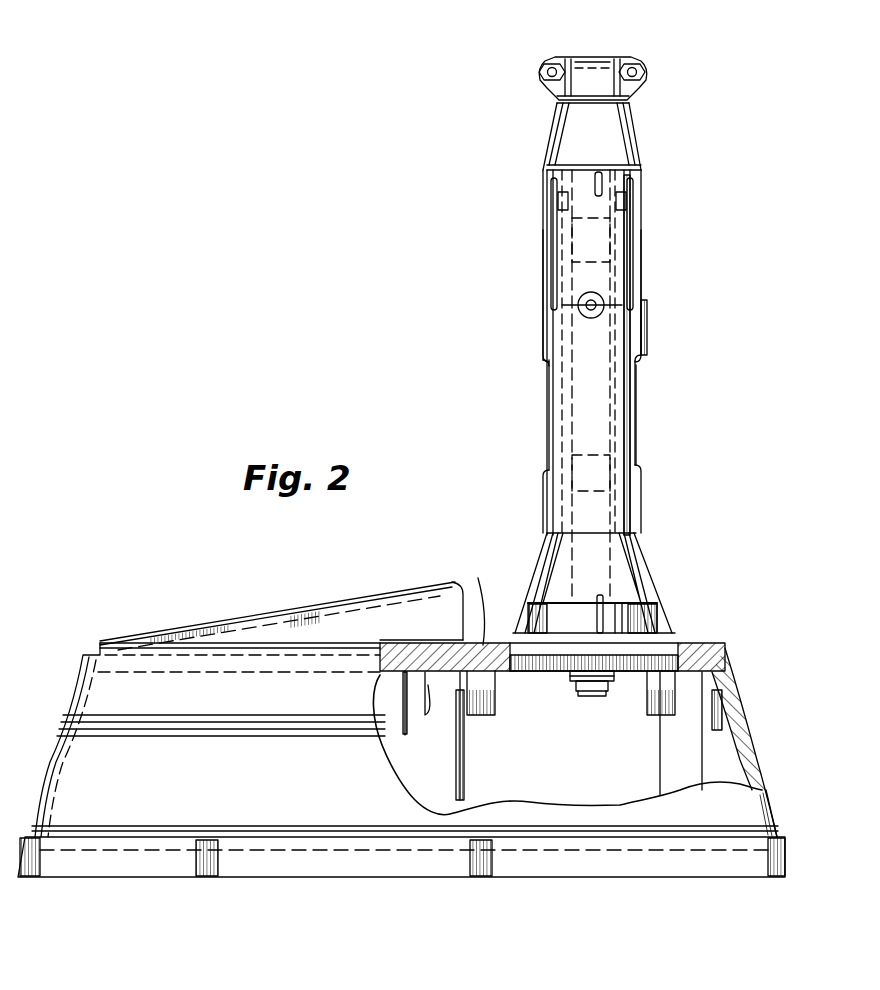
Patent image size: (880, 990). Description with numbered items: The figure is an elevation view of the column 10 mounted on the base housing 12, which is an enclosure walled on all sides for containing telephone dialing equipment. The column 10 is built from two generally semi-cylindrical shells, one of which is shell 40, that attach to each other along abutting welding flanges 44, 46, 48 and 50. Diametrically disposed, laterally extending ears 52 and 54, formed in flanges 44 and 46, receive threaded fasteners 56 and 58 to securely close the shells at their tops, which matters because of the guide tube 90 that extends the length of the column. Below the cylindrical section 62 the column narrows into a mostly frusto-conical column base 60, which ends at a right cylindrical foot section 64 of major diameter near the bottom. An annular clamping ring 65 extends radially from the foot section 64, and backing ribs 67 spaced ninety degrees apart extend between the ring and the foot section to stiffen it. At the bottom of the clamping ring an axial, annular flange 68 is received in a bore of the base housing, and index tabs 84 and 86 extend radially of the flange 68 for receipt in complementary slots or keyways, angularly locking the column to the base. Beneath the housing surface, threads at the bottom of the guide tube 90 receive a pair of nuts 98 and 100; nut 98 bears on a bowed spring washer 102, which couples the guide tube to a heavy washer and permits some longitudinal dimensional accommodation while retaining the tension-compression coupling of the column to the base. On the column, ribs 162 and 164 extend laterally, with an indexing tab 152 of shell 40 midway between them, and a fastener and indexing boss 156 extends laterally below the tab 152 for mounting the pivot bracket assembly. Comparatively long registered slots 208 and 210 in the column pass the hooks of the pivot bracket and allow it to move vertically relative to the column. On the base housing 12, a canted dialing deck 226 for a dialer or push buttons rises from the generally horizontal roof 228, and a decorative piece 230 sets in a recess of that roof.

The column 10 is at (626, 429).
The base housing 12 is at (298, 808).
The semi-cylindrical shell 40 is at (556, 403).
The welding flange 44 is at (546, 312).
The welding flange 46 is at (643, 323).
The welding flange 48 is at (546, 526).
The welding flange 50 is at (642, 538).
The ear 52 is at (555, 88).
The ear 54 is at (631, 88).
The threaded fastener 56 is at (549, 60).
The threaded fastener 58 is at (636, 60).
The column base 60 is at (628, 560).
The cylindrical section 62 is at (641, 443).
The cylindrical foot section 64 is at (642, 611).
The annular clamping ring 65 is at (572, 640).
The backing rib 67 is at (605, 603).
The axial annular flange 68 is at (670, 698).
The index tab 84 is at (524, 612).
The index tab 86 is at (680, 643).
The guide tube 90 is at (630, 374).
The nut 98 is at (575, 679).
The nut 100 is at (575, 692).
The bowed spring washer 102 is at (608, 681).
The indexing tab 152 is at (600, 182).
The fastener and indexing boss 156 is at (580, 316).
The rib 162 is at (556, 224).
The rib 164 is at (635, 204).
The slot 208 is at (560, 184).
The slot 210 is at (622, 196).
The canted dialing deck 226 is at (357, 603).
The roof 228 is at (434, 652).
The decorative piece 230 is at (478, 580).